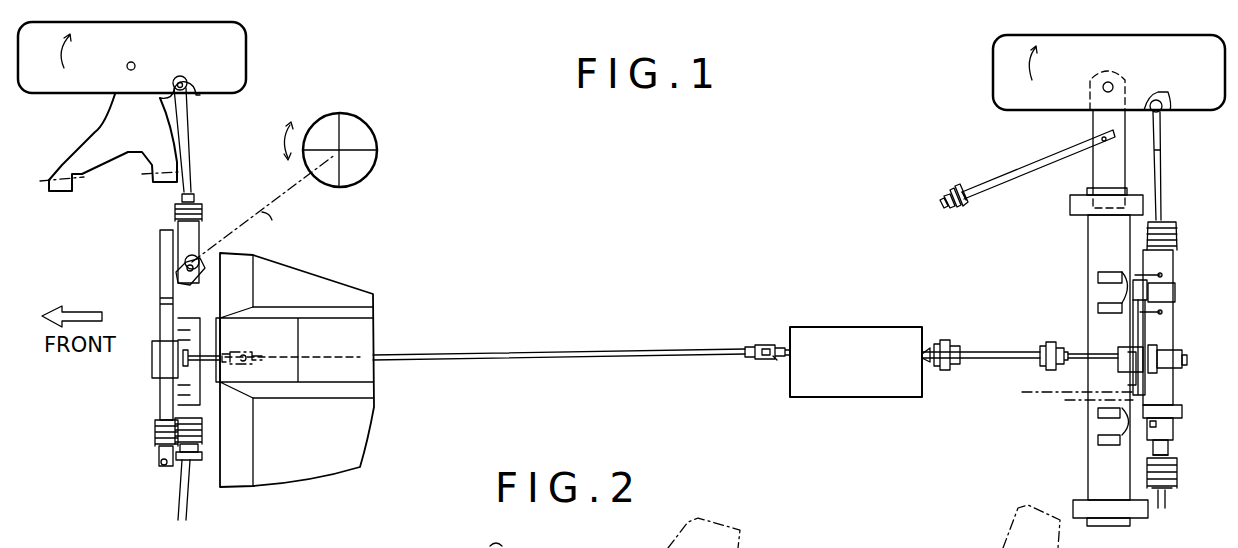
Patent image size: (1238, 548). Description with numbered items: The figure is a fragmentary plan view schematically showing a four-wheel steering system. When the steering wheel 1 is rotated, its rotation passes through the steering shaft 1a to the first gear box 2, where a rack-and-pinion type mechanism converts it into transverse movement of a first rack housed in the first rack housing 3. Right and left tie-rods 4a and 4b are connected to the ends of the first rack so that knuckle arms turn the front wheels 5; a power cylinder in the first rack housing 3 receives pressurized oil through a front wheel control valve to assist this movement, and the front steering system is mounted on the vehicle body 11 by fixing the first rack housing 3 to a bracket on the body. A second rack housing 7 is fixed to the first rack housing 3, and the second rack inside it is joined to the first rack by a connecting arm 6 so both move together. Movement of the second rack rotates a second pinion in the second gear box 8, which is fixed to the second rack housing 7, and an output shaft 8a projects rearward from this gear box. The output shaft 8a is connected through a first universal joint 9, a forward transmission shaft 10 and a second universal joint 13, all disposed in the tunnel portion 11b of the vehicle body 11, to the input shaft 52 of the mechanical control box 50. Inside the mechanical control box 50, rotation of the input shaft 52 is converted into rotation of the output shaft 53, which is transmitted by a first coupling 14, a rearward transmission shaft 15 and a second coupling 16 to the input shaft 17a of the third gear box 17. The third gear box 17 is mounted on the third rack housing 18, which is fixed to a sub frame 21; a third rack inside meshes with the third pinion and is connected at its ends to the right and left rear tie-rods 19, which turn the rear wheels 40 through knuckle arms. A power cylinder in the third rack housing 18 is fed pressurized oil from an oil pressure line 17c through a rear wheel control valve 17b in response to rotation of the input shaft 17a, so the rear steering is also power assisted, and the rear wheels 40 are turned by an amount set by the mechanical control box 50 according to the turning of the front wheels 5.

The steering wheel 1 is at (378, 158).
The steering shaft 1a is at (278, 220).
The first gear box 2 is at (200, 262).
The first rack housing 3 is at (190, 235).
The right tie-rod 4a is at (196, 162).
The left tie-rod 4b is at (195, 504).
The front wheels 5 is at (228, 46).
The connecting arm 6 is at (178, 490).
The second rack housing 7 is at (158, 397).
The second gear box 8 is at (160, 356).
The output shaft 8a is at (210, 352).
The first universal joint 9 is at (268, 345).
The forward transmission shaft 10 is at (510, 354).
The vehicle body 11 is at (295, 357).
The tunnel portion 11b is at (292, 341).
The second universal joint 13 is at (757, 330).
The first coupling 14 is at (958, 334).
The rearward transmission shaft 15 is at (996, 362).
The second coupling 16 is at (1042, 340).
The third gear box 17 is at (1172, 352).
The input shaft 17a is at (1100, 356).
The rear wheel control valve 17b is at (1152, 382).
The oil pressure line 17c is at (1082, 395).
The third rack housing 18 is at (1172, 320).
The rear tie-rods 19 is at (1162, 208).
The sub frame 21 is at (1098, 456).
The rear wheels 40 is at (1200, 98).
The mechanical control box 50 is at (893, 327).
The input shaft 52 is at (788, 368).
The output shaft 53 is at (928, 360).